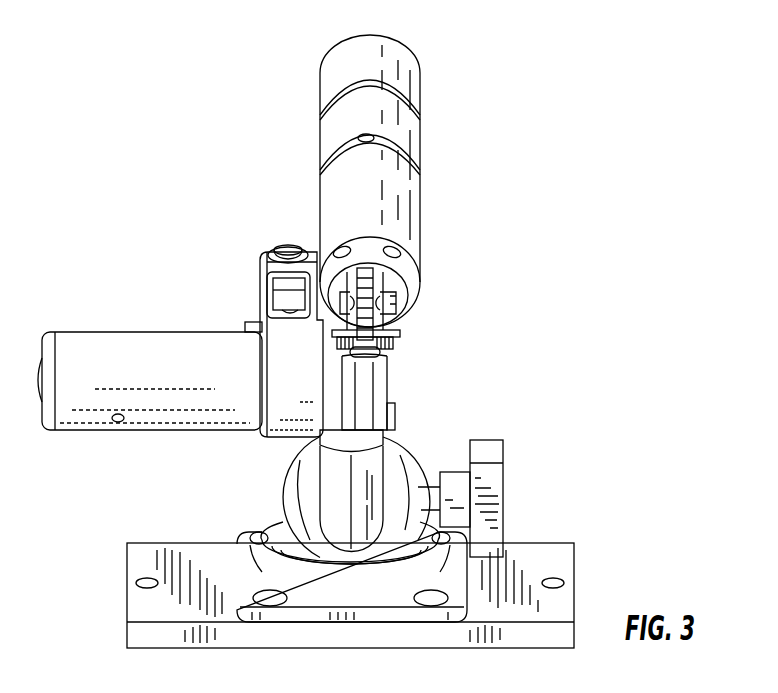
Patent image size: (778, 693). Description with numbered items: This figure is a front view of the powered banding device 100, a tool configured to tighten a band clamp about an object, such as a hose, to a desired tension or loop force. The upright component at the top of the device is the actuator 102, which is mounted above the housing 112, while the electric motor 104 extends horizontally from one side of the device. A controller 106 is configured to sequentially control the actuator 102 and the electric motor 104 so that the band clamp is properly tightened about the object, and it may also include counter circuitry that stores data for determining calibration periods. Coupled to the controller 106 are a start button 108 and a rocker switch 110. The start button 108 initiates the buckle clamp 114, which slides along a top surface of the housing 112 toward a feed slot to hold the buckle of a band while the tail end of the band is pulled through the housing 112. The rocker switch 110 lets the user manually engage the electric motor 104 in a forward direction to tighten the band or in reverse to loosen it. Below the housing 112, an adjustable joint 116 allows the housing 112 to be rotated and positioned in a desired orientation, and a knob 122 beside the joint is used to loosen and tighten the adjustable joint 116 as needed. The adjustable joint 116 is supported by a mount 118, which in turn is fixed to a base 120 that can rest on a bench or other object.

The powered banding device 100 is at (543, 79).
The actuator 102 is at (348, 68).
The electric motor 104 is at (153, 342).
The controller 106 is at (268, 428).
The start button 108 is at (290, 248).
The rocker switch 110 is at (280, 283).
The housing 112 is at (378, 383).
The buckle clamp 114 is at (398, 335).
The adjustable joint 116 is at (292, 490).
The mount 118 is at (258, 563).
The base 120 is at (552, 552).
The knob 122 is at (490, 440).